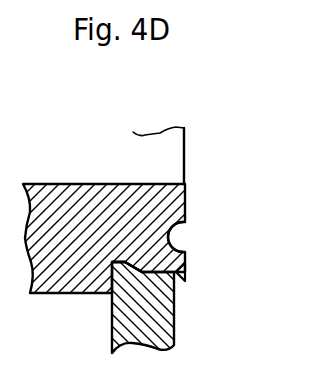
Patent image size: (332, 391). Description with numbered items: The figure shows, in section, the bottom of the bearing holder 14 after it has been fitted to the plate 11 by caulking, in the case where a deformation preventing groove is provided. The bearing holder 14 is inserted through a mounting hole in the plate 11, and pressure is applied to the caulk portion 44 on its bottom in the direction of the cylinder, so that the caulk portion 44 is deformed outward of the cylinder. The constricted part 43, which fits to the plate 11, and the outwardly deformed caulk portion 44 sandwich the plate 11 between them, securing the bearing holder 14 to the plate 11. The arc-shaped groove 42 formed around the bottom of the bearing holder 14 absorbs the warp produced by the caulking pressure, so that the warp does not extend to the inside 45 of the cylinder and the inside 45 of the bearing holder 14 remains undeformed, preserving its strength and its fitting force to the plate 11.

The bearing holder 14 is at (70, 204).
The inside of the cylinder 45 is at (185, 183).
The arc-shaped groove 42 is at (184, 240).
The caulk portion 44 is at (187, 270).
The plate 11 is at (153, 332).
The constricted part 43 is at (121, 265).